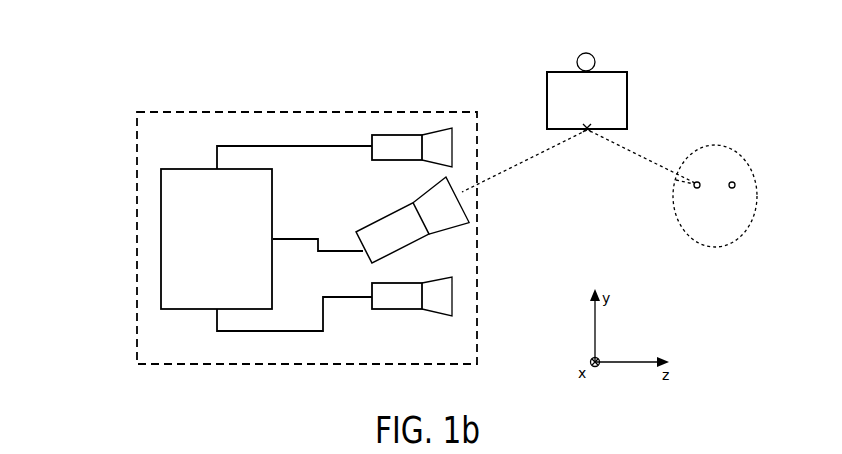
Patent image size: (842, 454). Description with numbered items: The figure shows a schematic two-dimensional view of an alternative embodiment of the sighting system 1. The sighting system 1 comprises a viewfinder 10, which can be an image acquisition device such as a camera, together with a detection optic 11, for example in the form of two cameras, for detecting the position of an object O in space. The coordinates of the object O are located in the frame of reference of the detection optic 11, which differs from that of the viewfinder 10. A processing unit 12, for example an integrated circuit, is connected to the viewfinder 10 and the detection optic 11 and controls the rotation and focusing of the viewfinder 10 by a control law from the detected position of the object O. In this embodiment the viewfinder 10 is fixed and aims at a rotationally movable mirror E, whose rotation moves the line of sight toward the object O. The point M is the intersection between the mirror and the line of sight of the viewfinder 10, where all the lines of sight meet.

The sighting system 1 is at (126, 139).
The viewfinder 10 is at (452, 214).
The detection optic 11 is at (437, 143).
The processing unit 12 is at (224, 248).
The eye / sensor device E is at (594, 57).
The point M is at (589, 133).
The object O is at (700, 182).